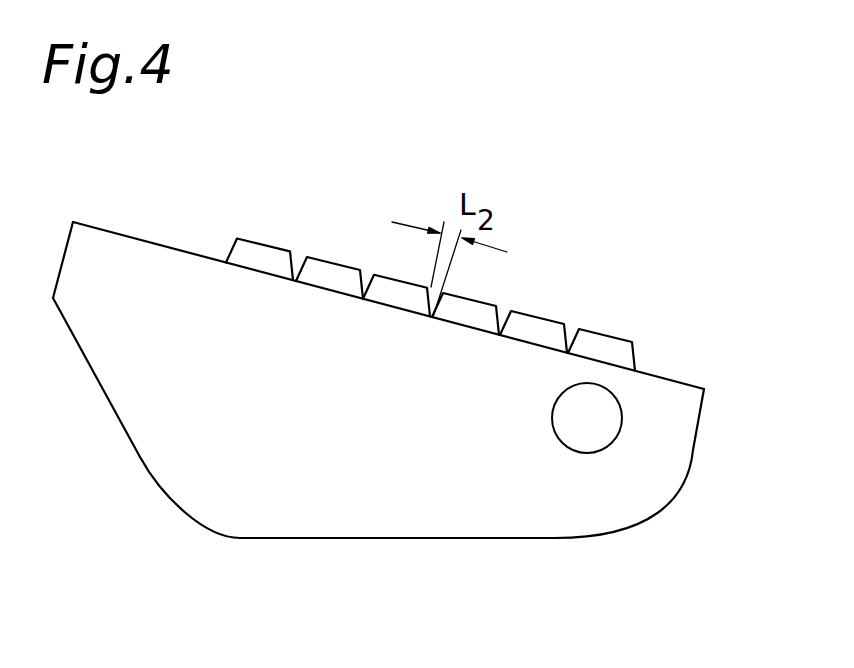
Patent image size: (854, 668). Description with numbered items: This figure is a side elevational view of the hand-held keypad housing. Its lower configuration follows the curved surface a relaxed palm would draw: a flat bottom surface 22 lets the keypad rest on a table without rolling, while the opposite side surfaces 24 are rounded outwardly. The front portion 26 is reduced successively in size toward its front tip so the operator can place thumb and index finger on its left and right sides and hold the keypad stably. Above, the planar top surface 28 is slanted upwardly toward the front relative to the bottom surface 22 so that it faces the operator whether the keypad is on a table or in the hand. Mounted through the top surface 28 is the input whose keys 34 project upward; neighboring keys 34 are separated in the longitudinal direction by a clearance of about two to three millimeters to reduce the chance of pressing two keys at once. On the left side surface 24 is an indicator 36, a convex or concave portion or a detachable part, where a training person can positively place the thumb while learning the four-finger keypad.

The bottom surface 22 is at (398, 540).
The side surfaces 24 is at (498, 445).
The front portion 26 is at (80, 356).
The top surface 28 is at (170, 248).
The keys 34 is at (267, 243).
The indicator 36 is at (621, 430).